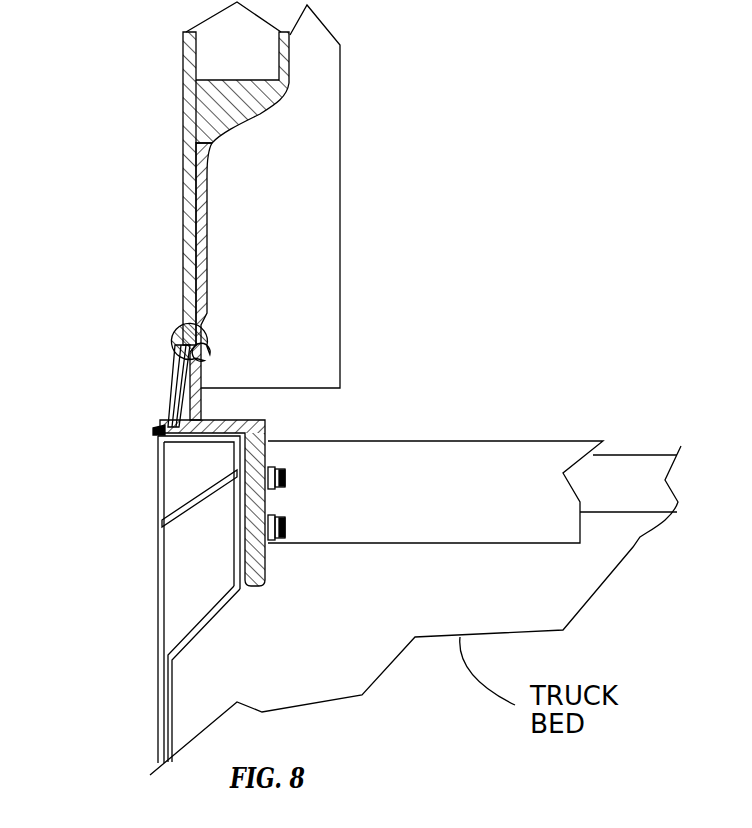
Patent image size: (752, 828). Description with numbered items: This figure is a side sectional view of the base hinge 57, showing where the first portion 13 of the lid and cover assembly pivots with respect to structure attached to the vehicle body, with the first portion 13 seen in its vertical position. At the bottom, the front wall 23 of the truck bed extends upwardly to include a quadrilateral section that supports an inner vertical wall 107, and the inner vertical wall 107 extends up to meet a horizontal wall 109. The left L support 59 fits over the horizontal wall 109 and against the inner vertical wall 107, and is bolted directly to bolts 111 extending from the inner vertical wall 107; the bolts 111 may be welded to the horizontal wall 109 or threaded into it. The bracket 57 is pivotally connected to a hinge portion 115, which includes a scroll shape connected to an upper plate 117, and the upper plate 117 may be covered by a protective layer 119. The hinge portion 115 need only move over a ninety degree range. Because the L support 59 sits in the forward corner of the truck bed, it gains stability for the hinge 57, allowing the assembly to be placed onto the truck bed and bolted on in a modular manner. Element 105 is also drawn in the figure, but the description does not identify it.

The first portion 13 is at (317, 232).
The protective layer 119 is at (208, 167).
The upper plate 117 is at (196, 248).
The hinge portion 115 is at (232, 357).
The horizontal wall 109 is at (167, 427).
The hinge 57 is at (265, 445).
The left L support 59 is at (157, 433).
The tailgate outer panel 105 is at (180, 548).
The inner vertical wall 107 is at (222, 546).
The front wall 23 is at (163, 715).
The bolts 111 is at (285, 473).